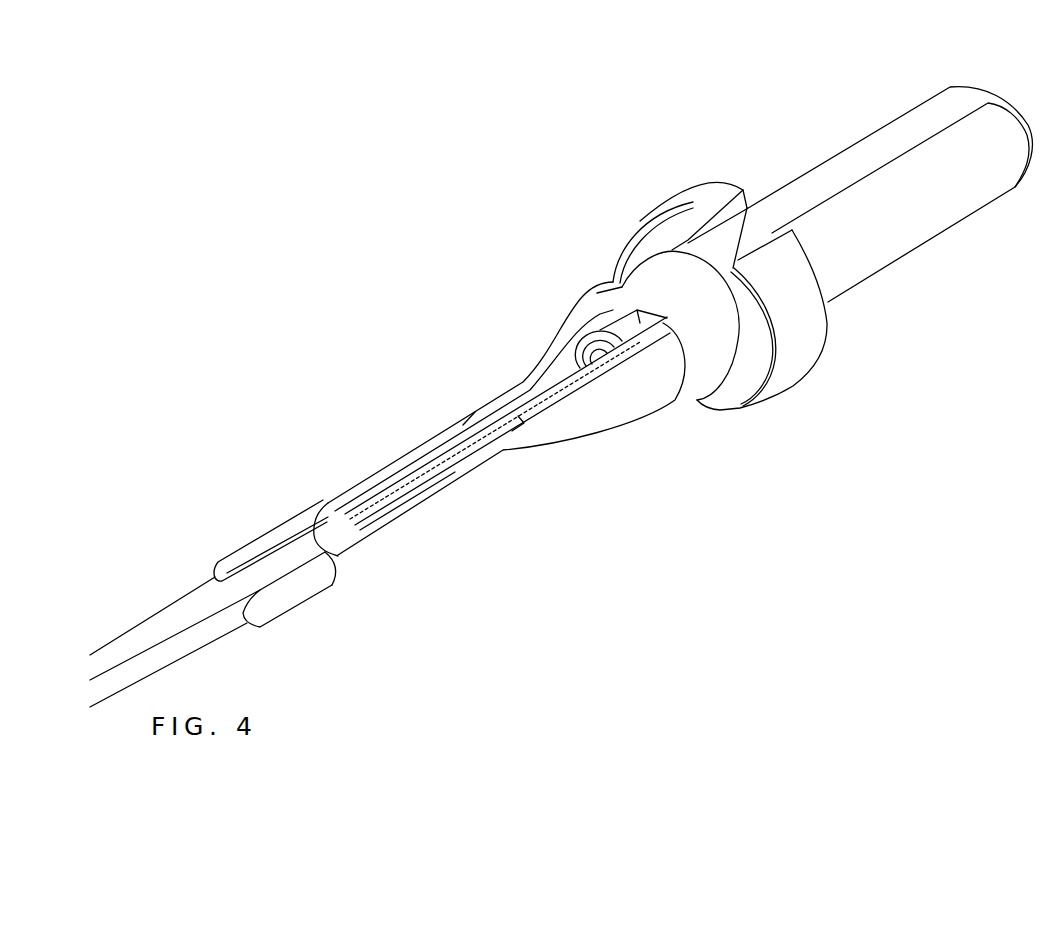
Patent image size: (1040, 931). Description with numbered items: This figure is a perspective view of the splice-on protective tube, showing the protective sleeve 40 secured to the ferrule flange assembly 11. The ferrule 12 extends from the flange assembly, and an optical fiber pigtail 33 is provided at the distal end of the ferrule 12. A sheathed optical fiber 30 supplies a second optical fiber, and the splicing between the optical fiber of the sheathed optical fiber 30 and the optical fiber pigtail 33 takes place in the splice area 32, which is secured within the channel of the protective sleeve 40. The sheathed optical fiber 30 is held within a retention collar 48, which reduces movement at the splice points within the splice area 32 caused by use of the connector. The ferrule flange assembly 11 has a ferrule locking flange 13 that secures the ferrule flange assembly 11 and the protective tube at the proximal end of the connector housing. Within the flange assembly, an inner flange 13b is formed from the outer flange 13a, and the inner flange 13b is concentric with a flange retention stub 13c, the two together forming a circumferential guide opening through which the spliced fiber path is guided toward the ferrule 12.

The ferrule flange assembly 11 is at (836, 363).
The ferrule 12 is at (860, 194).
The ferrule locking flange 13 is at (681, 203).
The outer flange 13a is at (643, 240).
The inner flange 13b is at (668, 325).
The flange retention stub 13c is at (627, 340).
The sheathed optical fiber 30 is at (166, 615).
The splice area 32 is at (430, 471).
The optical fiber pigtail 33 is at (522, 426).
The protective sleeve 40 is at (420, 376).
The retention collar 48 is at (304, 591).